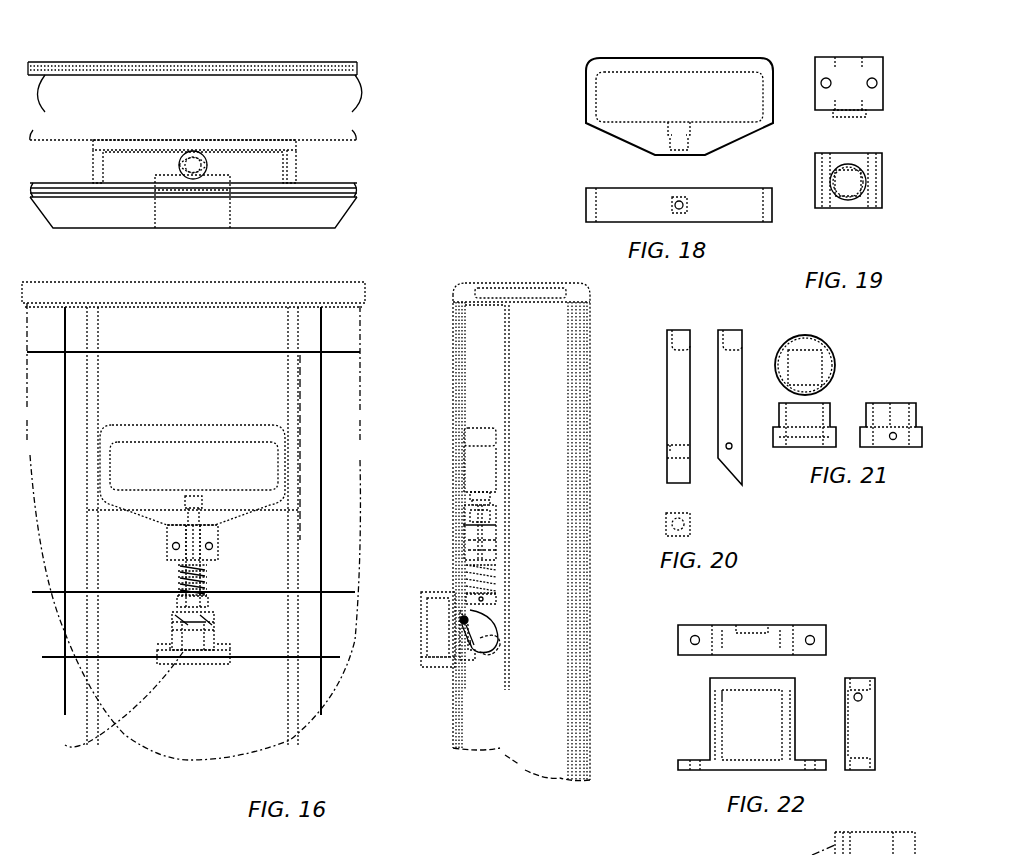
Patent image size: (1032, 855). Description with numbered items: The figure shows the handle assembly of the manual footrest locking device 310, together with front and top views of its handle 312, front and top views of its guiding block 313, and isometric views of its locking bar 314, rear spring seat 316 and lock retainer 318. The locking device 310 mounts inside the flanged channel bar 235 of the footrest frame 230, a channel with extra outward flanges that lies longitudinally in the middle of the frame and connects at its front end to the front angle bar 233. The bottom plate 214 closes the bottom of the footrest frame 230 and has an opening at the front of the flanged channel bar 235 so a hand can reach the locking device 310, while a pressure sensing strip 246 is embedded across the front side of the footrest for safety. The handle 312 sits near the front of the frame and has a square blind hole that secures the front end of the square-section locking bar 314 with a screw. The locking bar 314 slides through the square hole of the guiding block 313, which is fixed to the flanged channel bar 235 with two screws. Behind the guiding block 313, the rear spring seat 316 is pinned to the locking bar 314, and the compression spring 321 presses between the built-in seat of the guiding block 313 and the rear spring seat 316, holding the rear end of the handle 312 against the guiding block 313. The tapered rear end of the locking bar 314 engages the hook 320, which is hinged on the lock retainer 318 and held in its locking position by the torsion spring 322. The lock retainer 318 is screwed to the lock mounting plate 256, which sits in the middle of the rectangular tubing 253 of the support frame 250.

In FIG. 16, the bottom plate 214 is at (300, 382).
In FIG. 16, the footrest frame 230 is at (166, 118).
In FIG. 16, the front angle bar 233 is at (220, 352).
In FIG. 16, the flanged channel bar 235 is at (298, 165).
In FIG. 16, the pressure sensing strip 246 is at (554, 283).
In FIG. 16, the support frame 250 is at (98, 233).
In FIG. 16, the rectangular tubing 253 is at (270, 228).
In FIG. 16, the lock mounting plate 256 is at (437, 667).
In FIG. 16, the locking device 310 is at (230, 162).
In FIG. 16, the handle 312 is at (195, 425).
In FIG. 18, the handle 312 is at (680, 54).
In FIG. 16, the guiding block 313 is at (218, 545).
In FIG. 19, the guiding block 313 is at (848, 57).
In FIG. 16, the locking bar 314 is at (205, 560).
In FIG. 20, the locking bar 314 is at (665, 405).
In FIG. 16, the rear spring seat 316 is at (208, 601).
In FIG. 21, the rear spring seat 316 is at (835, 365).
In FIG. 16, the lock retainer 318 is at (214, 630).
In FIG. 22, the lock retainer 318 is at (826, 640).
In FIG. 16, the hook 320 is at (230, 662).
In FIG. 16, the compression spring 321 is at (205, 580).
In FIG. 16, the torsion spring 322 is at (111, 706).